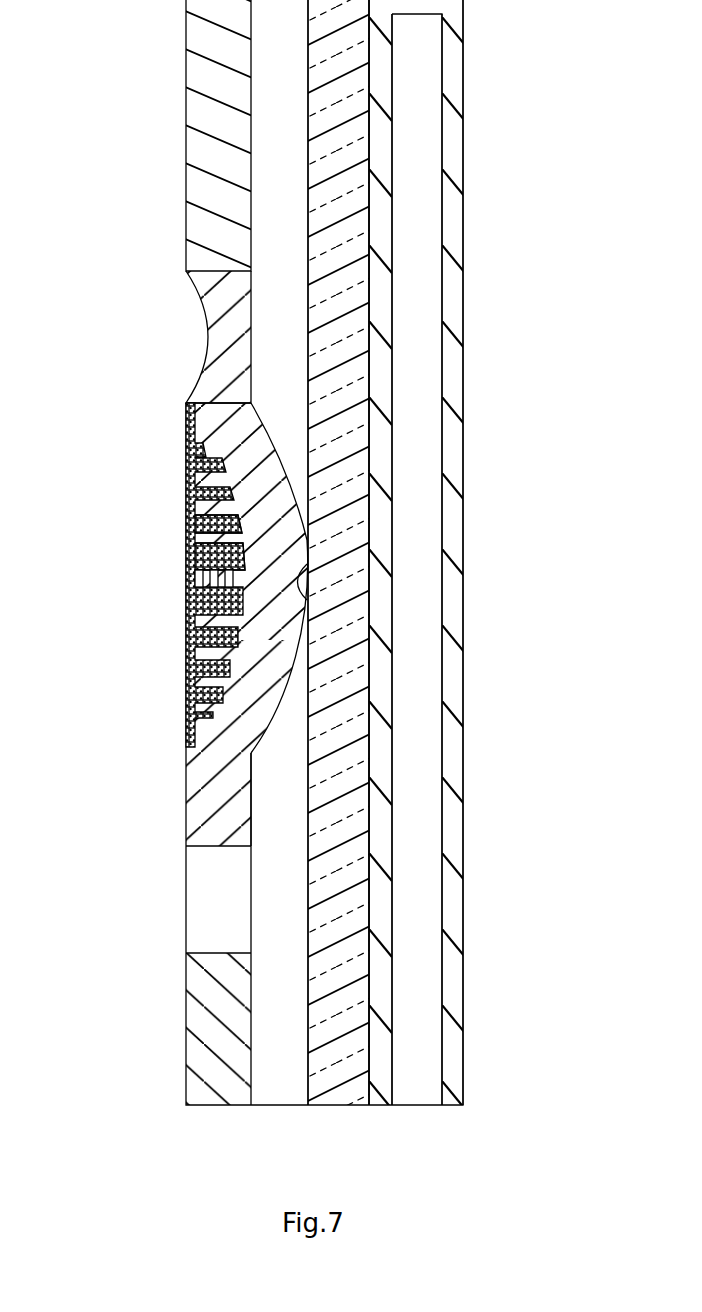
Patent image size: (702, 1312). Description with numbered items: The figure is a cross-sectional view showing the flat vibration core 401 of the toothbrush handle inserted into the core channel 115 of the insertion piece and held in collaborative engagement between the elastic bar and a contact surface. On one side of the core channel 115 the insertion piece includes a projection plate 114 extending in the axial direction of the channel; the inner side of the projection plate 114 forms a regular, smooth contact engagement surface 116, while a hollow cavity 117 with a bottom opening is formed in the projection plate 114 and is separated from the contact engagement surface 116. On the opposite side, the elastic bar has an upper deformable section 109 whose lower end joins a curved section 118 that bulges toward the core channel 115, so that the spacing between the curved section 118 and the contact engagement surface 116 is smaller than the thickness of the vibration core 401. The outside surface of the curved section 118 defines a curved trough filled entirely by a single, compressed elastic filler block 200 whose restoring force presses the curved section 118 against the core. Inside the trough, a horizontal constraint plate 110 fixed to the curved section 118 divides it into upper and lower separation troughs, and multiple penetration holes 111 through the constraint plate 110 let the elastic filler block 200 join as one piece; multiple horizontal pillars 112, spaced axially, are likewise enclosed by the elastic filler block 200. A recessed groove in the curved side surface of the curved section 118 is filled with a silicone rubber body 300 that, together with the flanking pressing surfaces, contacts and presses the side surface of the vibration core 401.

The deformable section 109 is at (232, 330).
The constraint plate 110 is at (195, 583).
The penetration holes 111 is at (208, 575).
The horizontal pillars 112 is at (207, 507).
The projection plate 114 is at (455, 673).
The core channel 115 is at (295, 838).
The contact engagement surface 116 is at (369, 148).
The hollow cavity 117 is at (420, 307).
The curved section 118 is at (283, 500).
The elastic filler block 200 is at (197, 602).
The silicone rubber body 300 is at (307, 583).
The vibration core 401 is at (337, 235).